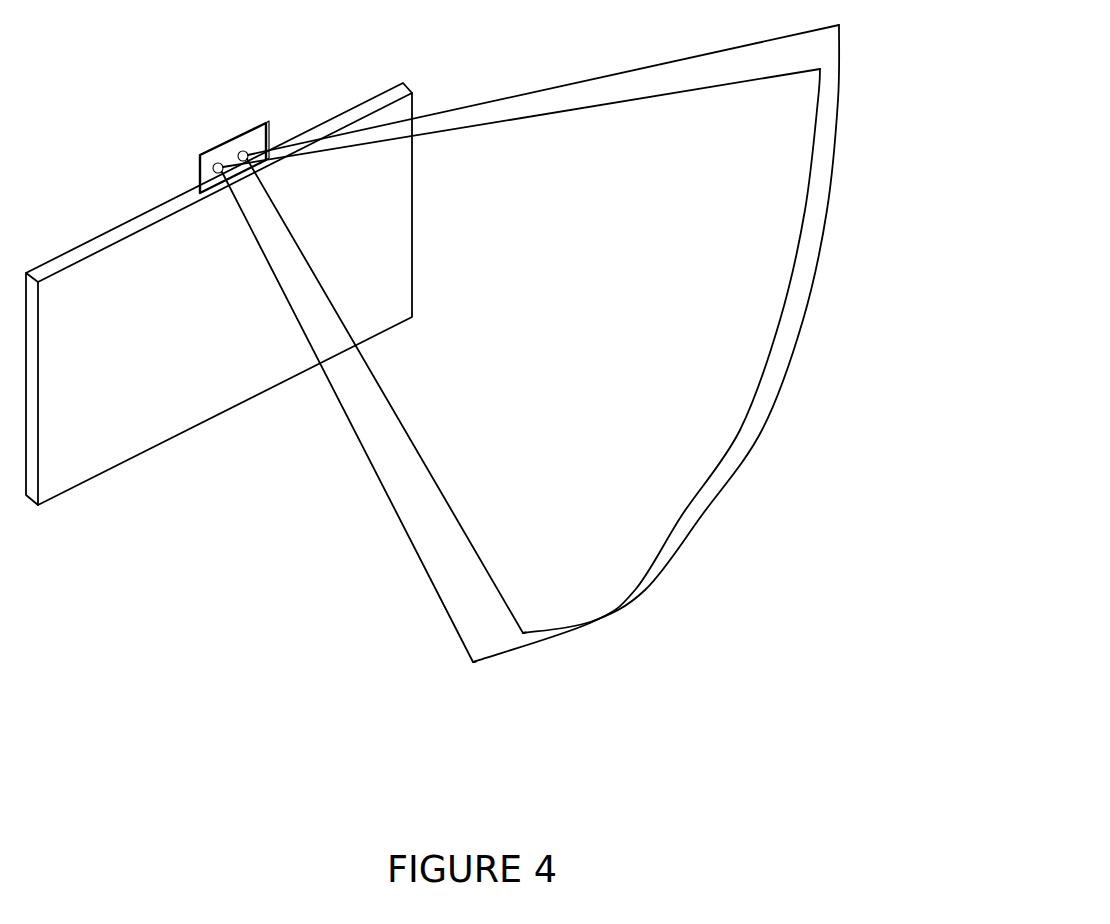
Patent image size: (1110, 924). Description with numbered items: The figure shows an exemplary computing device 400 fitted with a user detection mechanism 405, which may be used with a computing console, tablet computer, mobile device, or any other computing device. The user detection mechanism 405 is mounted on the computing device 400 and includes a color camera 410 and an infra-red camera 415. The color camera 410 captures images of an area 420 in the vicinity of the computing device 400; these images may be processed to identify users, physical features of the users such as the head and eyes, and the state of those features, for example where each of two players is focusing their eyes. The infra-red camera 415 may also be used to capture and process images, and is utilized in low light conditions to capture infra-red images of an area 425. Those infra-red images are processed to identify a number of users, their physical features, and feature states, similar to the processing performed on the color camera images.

The computing device 400 is at (75, 460).
The user detection mechanism 405 is at (230, 148).
The color camera 410 is at (216, 163).
The infra-red camera 415 is at (247, 150).
The area 420 is at (507, 648).
The area 425 is at (832, 43).